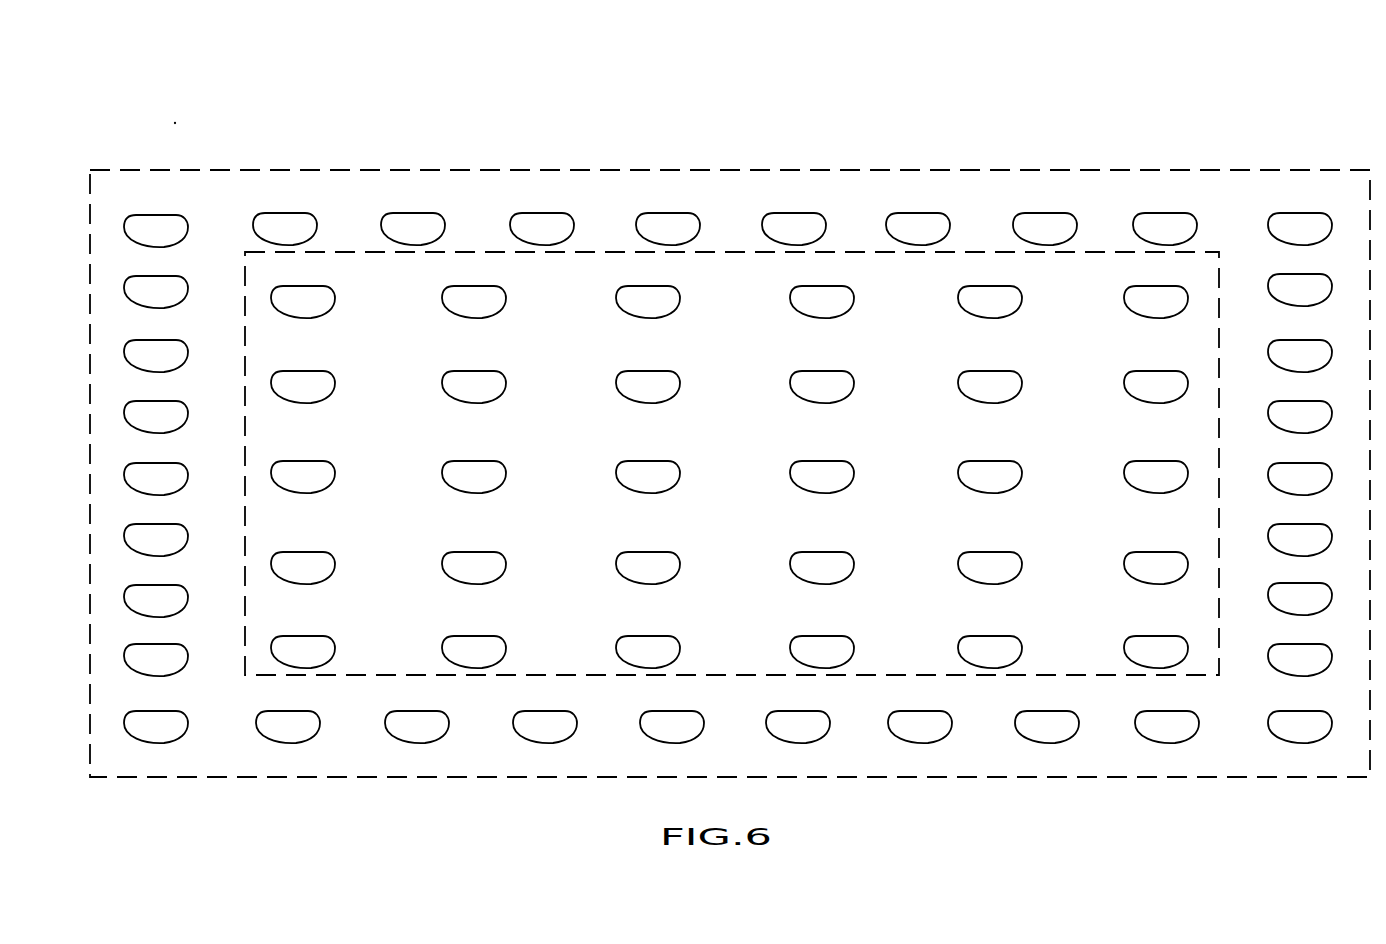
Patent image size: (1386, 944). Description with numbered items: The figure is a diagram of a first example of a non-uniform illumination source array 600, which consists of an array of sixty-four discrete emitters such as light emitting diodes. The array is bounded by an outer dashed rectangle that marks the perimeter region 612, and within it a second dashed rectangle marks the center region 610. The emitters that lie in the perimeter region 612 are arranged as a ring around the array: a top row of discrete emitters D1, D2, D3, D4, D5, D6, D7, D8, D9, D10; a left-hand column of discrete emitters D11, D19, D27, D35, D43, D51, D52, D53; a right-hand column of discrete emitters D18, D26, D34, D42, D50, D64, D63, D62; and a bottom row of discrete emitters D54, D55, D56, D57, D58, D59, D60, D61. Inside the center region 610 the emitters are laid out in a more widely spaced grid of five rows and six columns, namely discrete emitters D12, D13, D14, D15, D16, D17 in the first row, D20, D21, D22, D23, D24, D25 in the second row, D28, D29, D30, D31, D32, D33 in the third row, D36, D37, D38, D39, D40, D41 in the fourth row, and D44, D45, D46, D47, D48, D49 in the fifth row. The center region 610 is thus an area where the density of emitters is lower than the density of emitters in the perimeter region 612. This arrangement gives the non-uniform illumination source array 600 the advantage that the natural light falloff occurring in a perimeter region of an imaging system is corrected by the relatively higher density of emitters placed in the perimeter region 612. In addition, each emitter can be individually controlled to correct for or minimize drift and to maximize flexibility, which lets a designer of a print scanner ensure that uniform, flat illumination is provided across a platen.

The non-uniform illumination source array 600 is at (175, 123).
The center region 610 is at (1092, 283).
The perimeter region 612 is at (1242, 185).
The discrete emitter D1 is at (156, 217).
The discrete emitter D2 is at (285, 215).
The discrete emitter D3 is at (413, 215).
The discrete emitter D4 is at (542, 215).
The discrete emitter D5 is at (668, 215).
The discrete emitter D6 is at (794, 215).
The discrete emitter D7 is at (918, 215).
The discrete emitter D8 is at (1045, 215).
The discrete emitter D9 is at (1165, 215).
The discrete emitter D10 is at (1300, 215).
The discrete emitter D11 is at (156, 278).
The discrete emitter D12 is at (303, 288).
The discrete emitter D13 is at (474, 288).
The discrete emitter D14 is at (648, 288).
The discrete emitter D15 is at (822, 288).
The discrete emitter D16 is at (990, 288).
The discrete emitter D17 is at (1156, 288).
The discrete emitter D18 is at (1300, 276).
The discrete emitter D19 is at (156, 342).
The discrete emitter D20 is at (303, 373).
The discrete emitter D21 is at (474, 373).
The discrete emitter D22 is at (648, 373).
The discrete emitter D23 is at (822, 373).
The discrete emitter D24 is at (990, 373).
The discrete emitter D25 is at (1156, 373).
The discrete emitter D26 is at (1300, 342).
The discrete emitter D27 is at (156, 403).
The discrete emitter D28 is at (303, 463).
The discrete emitter D29 is at (474, 463).
The discrete emitter D30 is at (648, 463).
The discrete emitter D31 is at (822, 463).
The discrete emitter D32 is at (990, 463).
The discrete emitter D33 is at (1156, 463).
The discrete emitter D34 is at (1300, 403).
The discrete emitter D35 is at (156, 465).
The discrete emitter D36 is at (303, 554).
The discrete emitter D37 is at (474, 554).
The discrete emitter D38 is at (648, 554).
The discrete emitter D39 is at (822, 554).
The discrete emitter D40 is at (990, 554).
The discrete emitter D41 is at (1156, 554).
The discrete emitter D42 is at (1300, 465).
The discrete emitter D43 is at (156, 526).
The discrete emitter D44 is at (303, 638).
The discrete emitter D45 is at (474, 638).
The discrete emitter D46 is at (648, 638).
The discrete emitter D47 is at (822, 638).
The discrete emitter D48 is at (990, 638).
The discrete emitter D49 is at (1156, 638).
The discrete emitter D50 is at (1300, 526).
The discrete emitter D51 is at (156, 587).
The discrete emitter D52 is at (156, 646).
The discrete emitter D53 is at (156, 713).
The discrete emitter D54 is at (288, 713).
The discrete emitter D55 is at (417, 713).
The discrete emitter D56 is at (545, 713).
The discrete emitter D57 is at (672, 713).
The discrete emitter D58 is at (798, 713).
The discrete emitter D59 is at (920, 713).
The discrete emitter D60 is at (1047, 713).
The discrete emitter D61 is at (1167, 713).
The discrete emitter D62 is at (1300, 713).
The discrete emitter D63 is at (1300, 646).
The discrete emitter D64 is at (1300, 585).